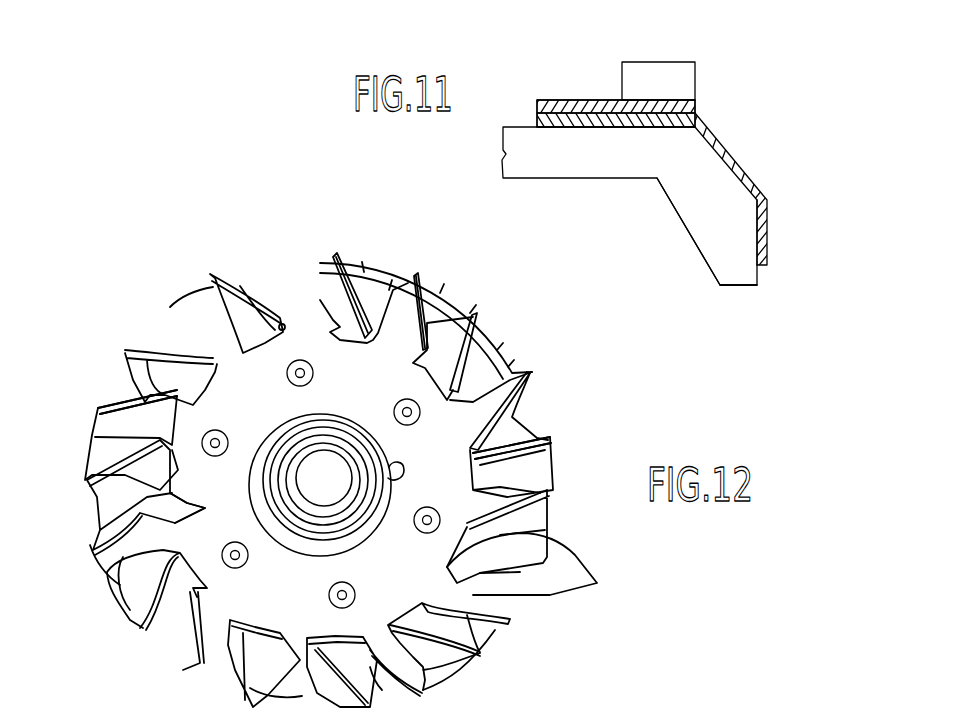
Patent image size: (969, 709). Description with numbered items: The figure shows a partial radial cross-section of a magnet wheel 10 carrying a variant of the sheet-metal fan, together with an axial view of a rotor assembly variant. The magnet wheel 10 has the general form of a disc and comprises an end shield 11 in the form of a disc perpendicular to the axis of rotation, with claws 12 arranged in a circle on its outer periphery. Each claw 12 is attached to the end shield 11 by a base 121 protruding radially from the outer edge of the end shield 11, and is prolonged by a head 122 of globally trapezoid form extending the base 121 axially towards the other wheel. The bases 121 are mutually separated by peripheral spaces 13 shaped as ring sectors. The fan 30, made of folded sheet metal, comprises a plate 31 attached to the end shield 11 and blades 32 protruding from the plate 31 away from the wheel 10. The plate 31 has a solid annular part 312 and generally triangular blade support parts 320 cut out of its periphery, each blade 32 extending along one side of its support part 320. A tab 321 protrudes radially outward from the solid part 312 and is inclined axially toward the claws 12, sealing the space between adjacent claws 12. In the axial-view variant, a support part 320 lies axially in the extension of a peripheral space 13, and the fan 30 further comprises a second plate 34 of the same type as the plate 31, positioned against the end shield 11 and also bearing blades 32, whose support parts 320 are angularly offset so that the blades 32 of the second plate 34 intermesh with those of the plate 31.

In FIG. 11, the magnet wheel 10 is at (650, 223).
In FIG. 12, the magnet wheel 10 is at (150, 293).
In FIG. 11, the end shield 11 is at (555, 160).
In FIG. 11, the claw 12 is at (720, 218).
In FIG. 12, the claw 12 is at (180, 295).
In FIG. 12, the peripheral space 13 is at (243, 282).
In FIG. 11, the fan 30 is at (727, 70).
In FIG. 12, the fan 30 is at (98, 381).
In FIG. 11, the plate 31 is at (537, 125).
In FIG. 11, the blade 32 is at (655, 73).
In FIG. 12, the blade 32 is at (199, 503).
In FIG. 11, the second plate 34 is at (588, 100).
In FIG. 12, the second plate 34 is at (88, 448).
In FIG. 11, the base 121 is at (707, 172).
In FIG. 11, the head 122 is at (737, 267).
In FIG. 11, the tab 321 is at (720, 147).
In FIG. 12, the solid annular part 312 is at (543, 452).
In FIG. 12, the blade support part 320 is at (592, 577).